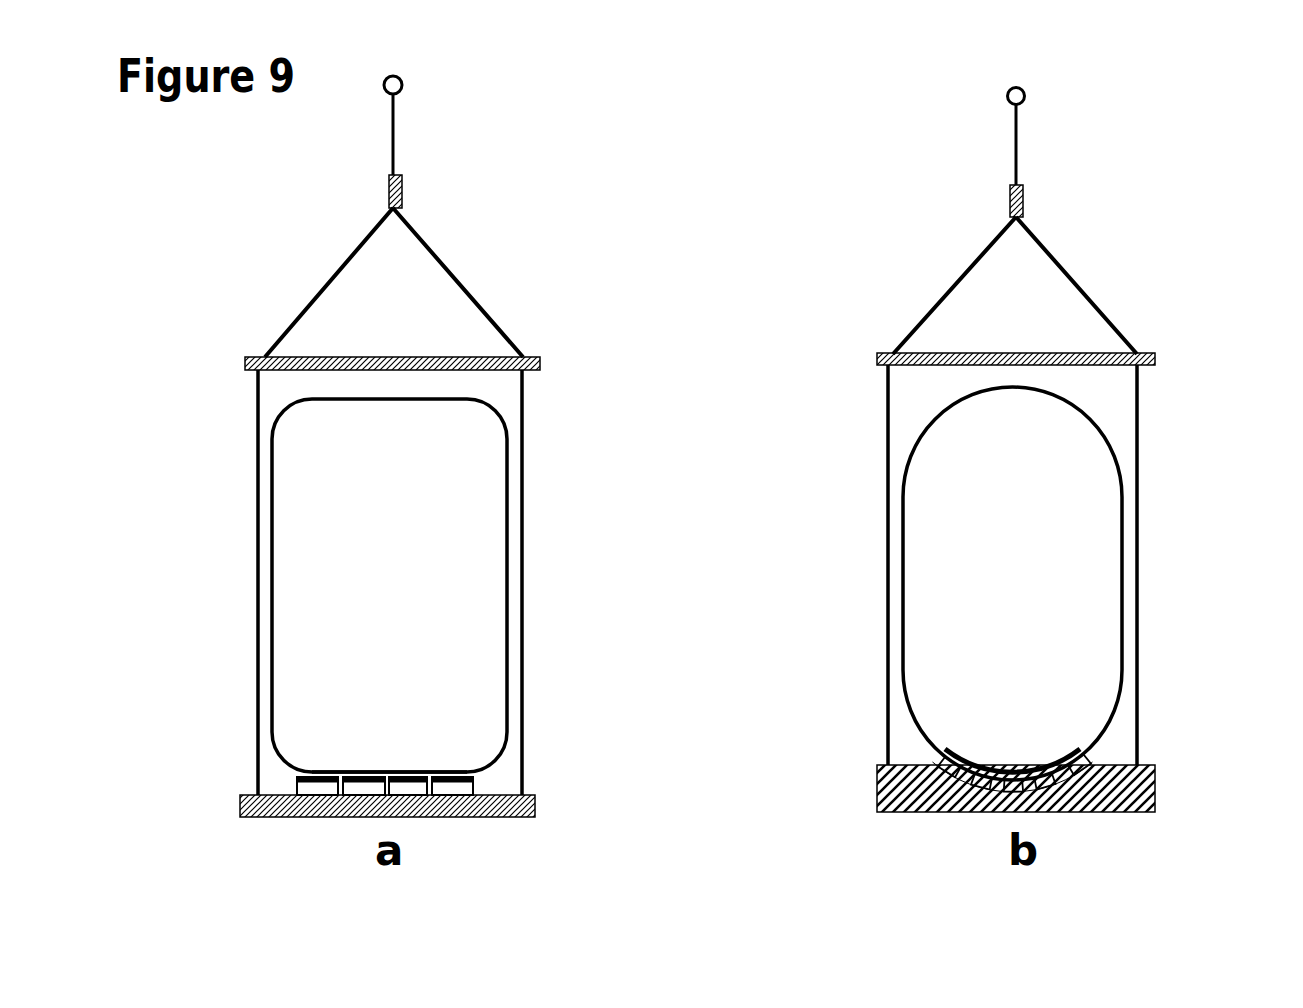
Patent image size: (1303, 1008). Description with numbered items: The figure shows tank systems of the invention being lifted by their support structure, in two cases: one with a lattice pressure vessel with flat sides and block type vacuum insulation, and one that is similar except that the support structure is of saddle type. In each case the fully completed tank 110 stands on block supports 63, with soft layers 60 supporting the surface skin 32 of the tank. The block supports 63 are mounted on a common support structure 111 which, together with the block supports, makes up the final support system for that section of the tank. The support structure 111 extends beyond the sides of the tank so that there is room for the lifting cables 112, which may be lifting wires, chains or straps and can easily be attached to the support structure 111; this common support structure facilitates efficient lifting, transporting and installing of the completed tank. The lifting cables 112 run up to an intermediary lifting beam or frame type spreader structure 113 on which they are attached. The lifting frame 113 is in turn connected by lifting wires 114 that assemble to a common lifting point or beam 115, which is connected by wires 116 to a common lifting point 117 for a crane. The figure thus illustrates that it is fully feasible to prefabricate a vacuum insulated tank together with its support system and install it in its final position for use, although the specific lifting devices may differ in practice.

The common lifting point 117 is at (400, 92).
The wires 116 is at (390, 133).
The common lifting point or beam 115 is at (403, 192).
The lifting wires 114 is at (443, 268).
The lifting beam or frame type spreader structure 113 is at (432, 358).
The lifting cables 112 is at (260, 490).
The tank 110 is at (327, 600).
The surface skin 32 is at (380, 772).
The block supports 63 is at (340, 787).
The soft layers 60 is at (457, 772).
The support structure 111 is at (523, 797).